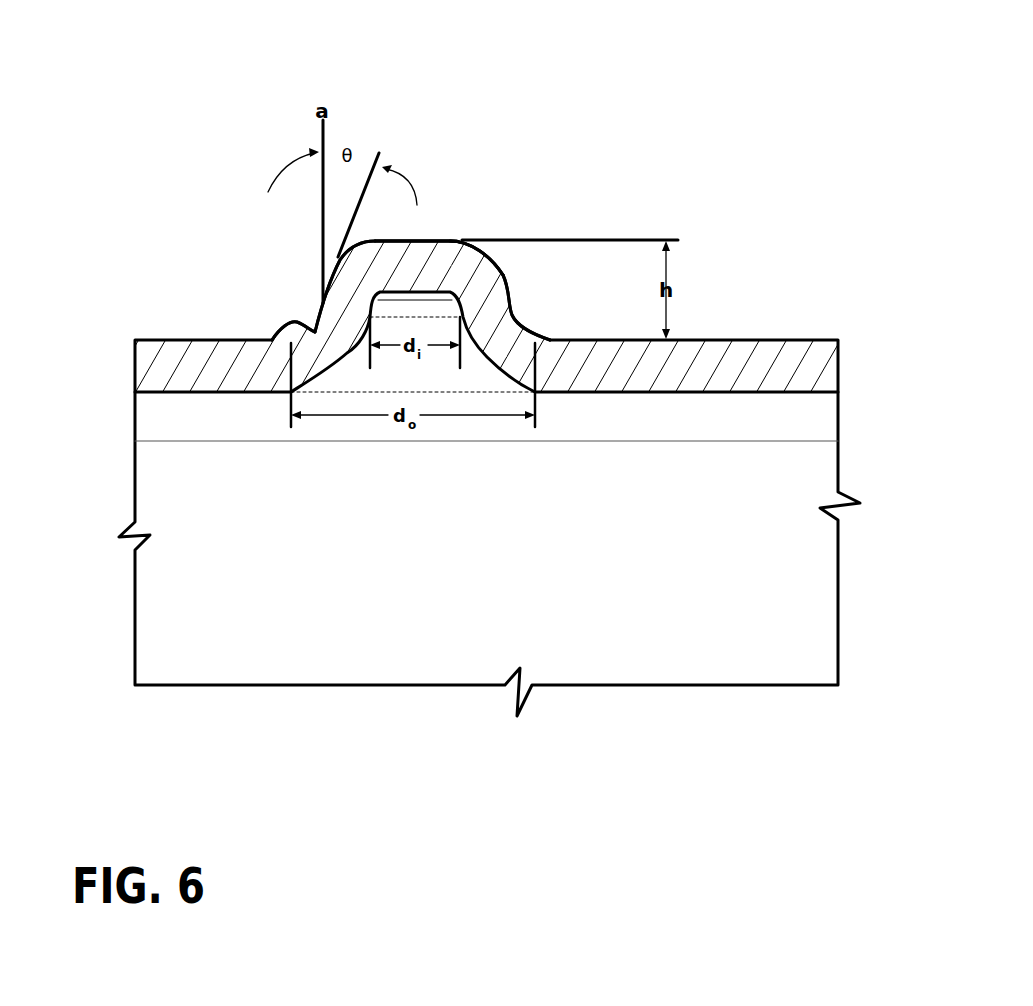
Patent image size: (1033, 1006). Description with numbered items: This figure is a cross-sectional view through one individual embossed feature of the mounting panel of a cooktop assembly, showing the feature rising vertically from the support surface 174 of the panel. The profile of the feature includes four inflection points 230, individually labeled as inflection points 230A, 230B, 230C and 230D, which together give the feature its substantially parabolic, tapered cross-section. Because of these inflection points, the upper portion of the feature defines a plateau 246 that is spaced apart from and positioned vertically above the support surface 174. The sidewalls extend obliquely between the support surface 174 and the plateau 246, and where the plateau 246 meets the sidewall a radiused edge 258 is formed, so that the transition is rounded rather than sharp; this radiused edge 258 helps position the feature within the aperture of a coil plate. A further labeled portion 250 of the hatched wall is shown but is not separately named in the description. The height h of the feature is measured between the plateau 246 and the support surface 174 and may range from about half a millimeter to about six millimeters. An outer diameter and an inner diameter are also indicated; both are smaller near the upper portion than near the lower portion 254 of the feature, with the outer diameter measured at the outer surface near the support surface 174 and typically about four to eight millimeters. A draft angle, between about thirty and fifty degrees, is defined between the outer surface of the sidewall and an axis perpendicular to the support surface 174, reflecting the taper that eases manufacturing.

The support surface 174 is at (768, 340).
The inflection points 230 is at (247, 242).
The inflection point 230A is at (302, 327).
The inflection point 230B is at (340, 262).
The inflection point 230C is at (485, 262).
The inflection point 230D is at (540, 332).
The plateau 246 is at (422, 238).
The wall of protrusion 250 is at (457, 267).
The lower portion 254 is at (500, 340).
The radiused edge 258 is at (465, 242).